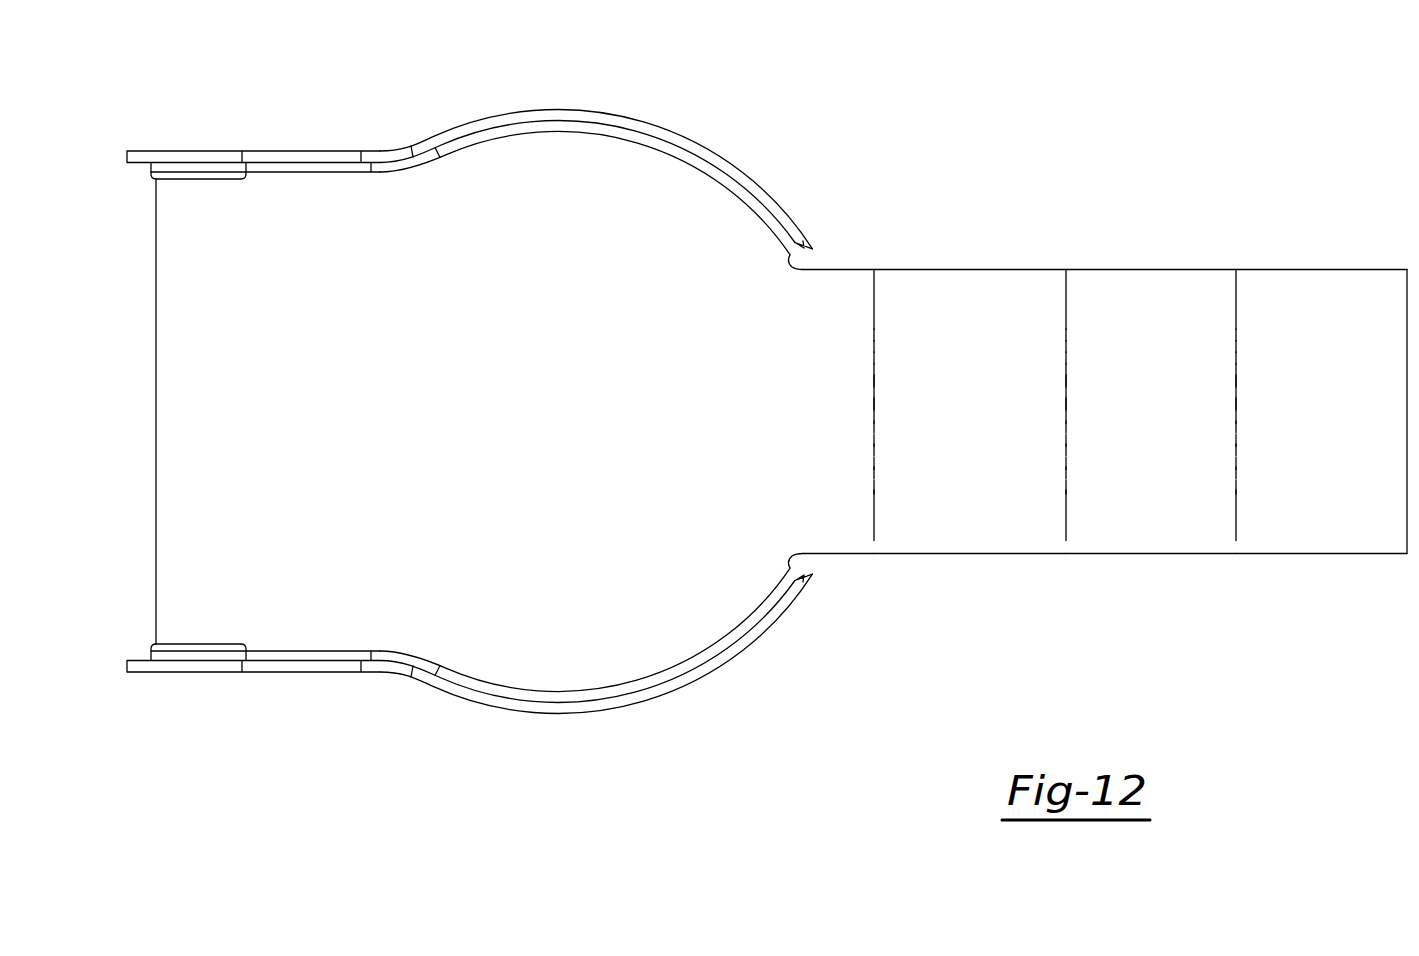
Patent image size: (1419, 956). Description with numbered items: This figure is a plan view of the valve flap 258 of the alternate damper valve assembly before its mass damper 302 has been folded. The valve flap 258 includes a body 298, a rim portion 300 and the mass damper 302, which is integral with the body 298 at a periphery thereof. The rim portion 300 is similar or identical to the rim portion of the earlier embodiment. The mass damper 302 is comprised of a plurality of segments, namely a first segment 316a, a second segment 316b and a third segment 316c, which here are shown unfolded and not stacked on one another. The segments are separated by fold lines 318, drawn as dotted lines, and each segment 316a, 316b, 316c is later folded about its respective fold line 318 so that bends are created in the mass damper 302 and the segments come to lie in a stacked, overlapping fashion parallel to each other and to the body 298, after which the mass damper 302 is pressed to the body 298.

The valve flap 258 is at (822, 130).
The body 298 is at (553, 170).
The rim portion 300 is at (643, 127).
The mass damper 302 is at (1088, 200).
The first segment 316a is at (958, 288).
The second segment 316b is at (1138, 288).
The third segment 316c is at (1292, 288).
The fold line 318 is at (874, 369).